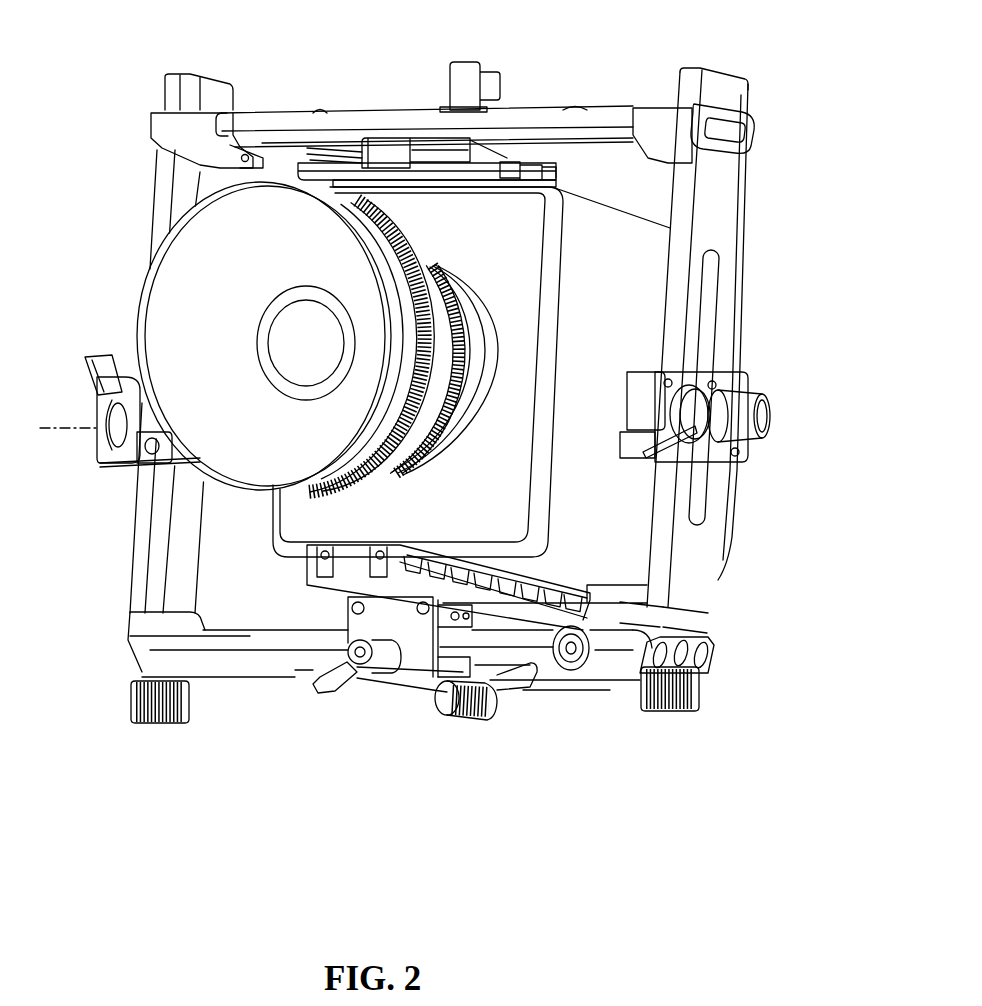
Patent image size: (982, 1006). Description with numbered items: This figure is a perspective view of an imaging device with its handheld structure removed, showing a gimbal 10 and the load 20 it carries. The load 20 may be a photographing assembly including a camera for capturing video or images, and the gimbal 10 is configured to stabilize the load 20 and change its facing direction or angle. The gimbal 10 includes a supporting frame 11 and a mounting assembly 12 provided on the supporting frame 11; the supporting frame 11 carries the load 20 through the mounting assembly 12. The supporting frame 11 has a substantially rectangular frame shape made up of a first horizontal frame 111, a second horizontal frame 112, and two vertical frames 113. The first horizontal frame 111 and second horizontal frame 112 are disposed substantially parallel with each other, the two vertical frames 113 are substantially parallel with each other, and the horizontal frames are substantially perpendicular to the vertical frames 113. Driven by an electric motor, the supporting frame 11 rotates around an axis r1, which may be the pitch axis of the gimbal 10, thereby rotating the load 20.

The gimbal 10 is at (714, 56).
The supporting frame 11 is at (431, 402).
The second horizontal frame 112 is at (372, 120).
The vertical frames 113 is at (725, 184).
The first horizontal frame 111 is at (232, 662).
The mounting assembly 12 is at (407, 640).
The load 20 is at (633, 263).
The axis r1 is at (768, 416).